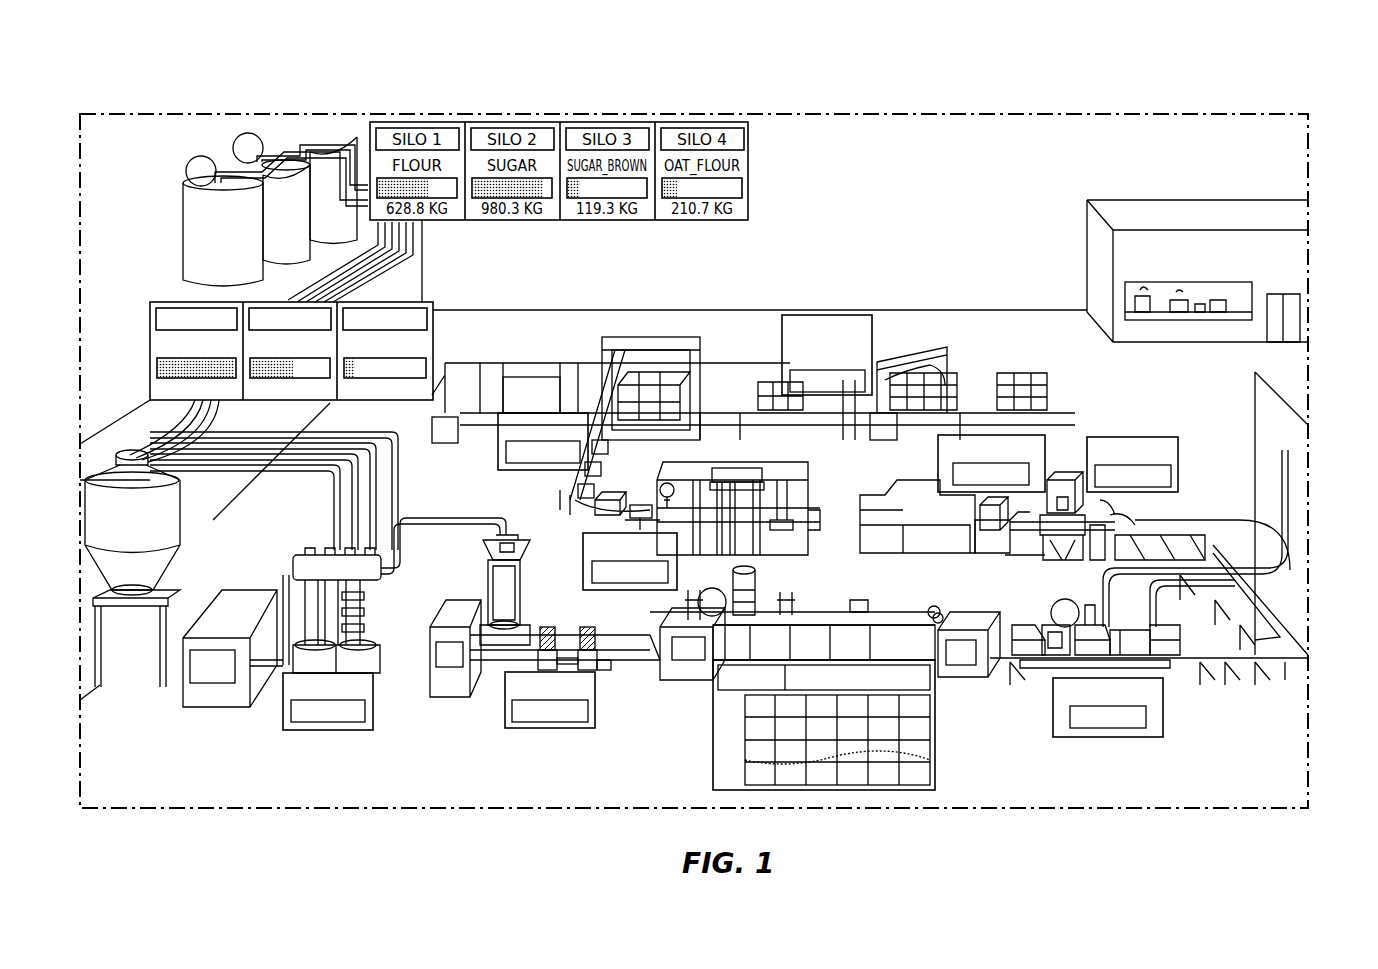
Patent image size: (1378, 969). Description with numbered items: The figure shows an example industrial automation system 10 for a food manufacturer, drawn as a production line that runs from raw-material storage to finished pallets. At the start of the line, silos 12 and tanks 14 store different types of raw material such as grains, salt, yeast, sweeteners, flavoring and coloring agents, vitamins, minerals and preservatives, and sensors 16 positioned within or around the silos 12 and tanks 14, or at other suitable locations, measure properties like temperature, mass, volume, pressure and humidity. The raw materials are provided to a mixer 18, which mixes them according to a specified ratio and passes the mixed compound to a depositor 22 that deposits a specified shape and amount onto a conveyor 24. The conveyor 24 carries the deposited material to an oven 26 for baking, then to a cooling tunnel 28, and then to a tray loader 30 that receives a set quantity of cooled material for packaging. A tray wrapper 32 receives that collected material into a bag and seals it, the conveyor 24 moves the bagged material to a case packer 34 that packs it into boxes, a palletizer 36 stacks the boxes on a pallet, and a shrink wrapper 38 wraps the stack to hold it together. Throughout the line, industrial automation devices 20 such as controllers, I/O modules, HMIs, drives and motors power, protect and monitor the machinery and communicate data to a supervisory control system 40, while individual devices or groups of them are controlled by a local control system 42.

The industrial automation system 10 is at (1236, 71).
The silos 12 is at (292, 146).
The tanks 14 is at (138, 360).
The sensors 16 is at (201, 155).
The mixer 18 is at (378, 686).
The industrial automation devices 20 is at (210, 702).
The depositor 22 is at (609, 674).
The conveyor 24 is at (838, 500).
The oven 26 is at (906, 604).
The cooling tunnel 28 is at (1158, 652).
The tray loader 30 is at (1182, 467).
The tray wrapper 32 is at (934, 456).
The case packer 34 is at (580, 560).
The palletizer 36 is at (486, 456).
The shrink wrapper 38 is at (876, 338).
The supervisory control system 40 is at (1202, 288).
The local control system 42 is at (208, 705).